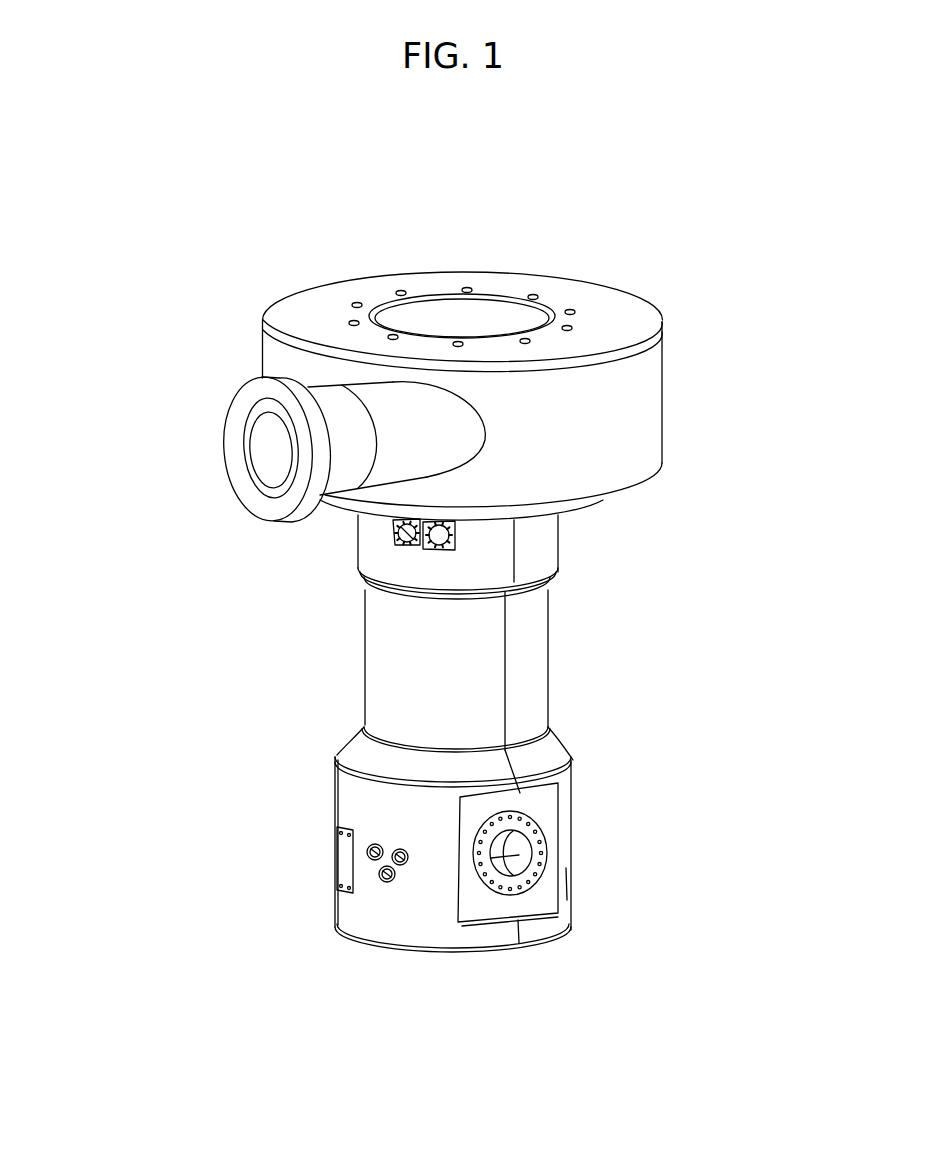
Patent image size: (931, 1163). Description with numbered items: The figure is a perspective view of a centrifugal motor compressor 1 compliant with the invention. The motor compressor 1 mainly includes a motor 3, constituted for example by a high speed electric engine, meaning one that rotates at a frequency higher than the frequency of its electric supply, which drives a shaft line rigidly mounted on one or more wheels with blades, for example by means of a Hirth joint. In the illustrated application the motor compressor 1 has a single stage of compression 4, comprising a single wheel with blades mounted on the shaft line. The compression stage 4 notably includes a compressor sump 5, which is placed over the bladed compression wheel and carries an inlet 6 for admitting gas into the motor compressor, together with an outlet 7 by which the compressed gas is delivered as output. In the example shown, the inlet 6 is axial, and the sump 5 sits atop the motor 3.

The motor compressor 1 is at (697, 578).
The motor 3 is at (308, 658).
The compression stage 4 is at (675, 421).
The compressor sump 5 is at (662, 370).
The inlet 6 is at (492, 257).
The outlet 7 is at (220, 474).